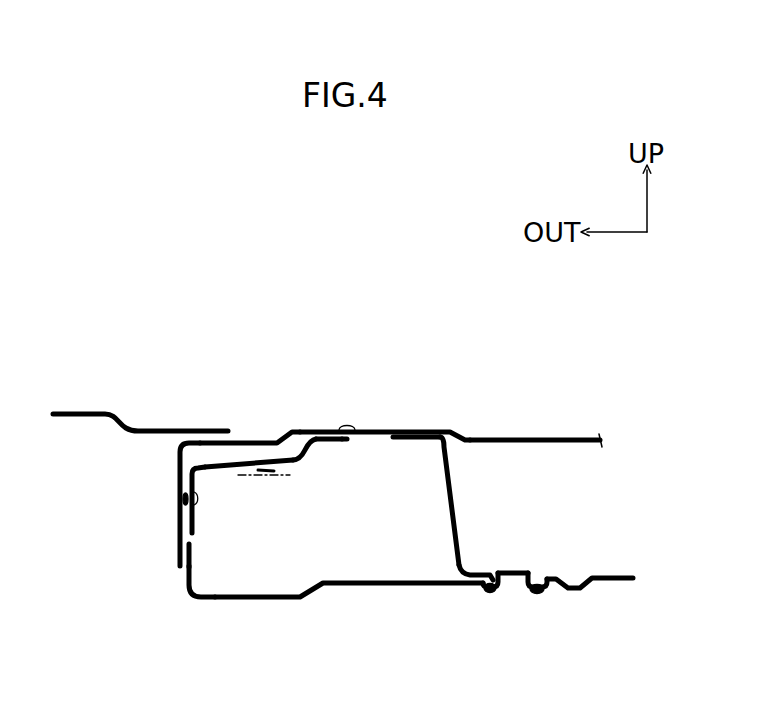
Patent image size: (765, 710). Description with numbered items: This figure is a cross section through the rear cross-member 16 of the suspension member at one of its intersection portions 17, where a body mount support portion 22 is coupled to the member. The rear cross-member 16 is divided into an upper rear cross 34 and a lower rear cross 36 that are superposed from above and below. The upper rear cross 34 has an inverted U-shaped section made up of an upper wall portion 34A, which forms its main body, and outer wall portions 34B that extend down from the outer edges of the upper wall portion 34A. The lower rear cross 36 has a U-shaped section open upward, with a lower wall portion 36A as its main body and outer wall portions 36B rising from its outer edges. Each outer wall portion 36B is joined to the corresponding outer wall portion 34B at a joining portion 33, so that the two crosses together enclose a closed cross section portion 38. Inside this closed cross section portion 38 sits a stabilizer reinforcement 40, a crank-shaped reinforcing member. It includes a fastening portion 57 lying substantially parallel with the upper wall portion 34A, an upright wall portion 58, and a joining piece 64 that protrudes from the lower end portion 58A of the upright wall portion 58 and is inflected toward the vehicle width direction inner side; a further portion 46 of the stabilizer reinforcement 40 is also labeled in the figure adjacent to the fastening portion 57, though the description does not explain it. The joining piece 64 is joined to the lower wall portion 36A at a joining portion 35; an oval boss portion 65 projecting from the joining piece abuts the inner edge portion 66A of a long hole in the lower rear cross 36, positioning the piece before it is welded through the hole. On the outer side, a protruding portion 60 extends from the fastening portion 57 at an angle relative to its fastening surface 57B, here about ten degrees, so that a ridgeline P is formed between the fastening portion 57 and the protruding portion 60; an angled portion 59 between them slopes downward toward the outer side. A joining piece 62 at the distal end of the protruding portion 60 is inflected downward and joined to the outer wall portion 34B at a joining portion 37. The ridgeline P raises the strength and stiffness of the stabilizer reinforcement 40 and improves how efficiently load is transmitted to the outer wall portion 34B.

The body mount support portion 22 is at (137, 404).
The upper rear cross 34 is at (381, 447).
The upper wall portion 34A is at (506, 436).
The outer wall portion 34B is at (177, 470).
The rear cross-member 16 is at (562, 399).
The intersection portion 17 is at (385, 388).
The ridgeline P is at (373, 397).
The upper flange of bracket 46 is at (403, 417).
The stabilizer reinforcement 40 is at (451, 472).
The upright wall portion 58 is at (447, 503).
The lower end portion 58A is at (455, 572).
The lower rear cross 36 is at (369, 588).
The lower wall portion 36A is at (550, 589).
The outer wall portion 36B is at (188, 578).
The joining portion 33 is at (186, 552).
The joining portion 37 is at (179, 508).
The closed cross section portion 38 is at (532, 588).
The joining portion 35 is at (490, 594).
The boss portion 65 is at (475, 600).
The joining piece 64 is at (520, 571).
The inner edge portion 66A is at (530, 594).
The protruding portion 60 is at (293, 449).
The joining piece 62 is at (196, 500).
The angled portion 59 is at (303, 444).
The fastening portion 57 is at (351, 472).
The fastening surface 57B is at (348, 441).